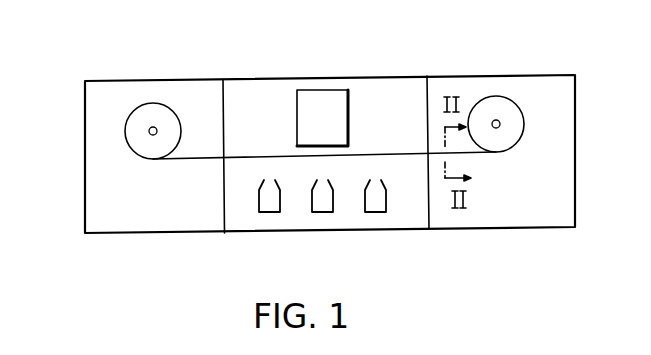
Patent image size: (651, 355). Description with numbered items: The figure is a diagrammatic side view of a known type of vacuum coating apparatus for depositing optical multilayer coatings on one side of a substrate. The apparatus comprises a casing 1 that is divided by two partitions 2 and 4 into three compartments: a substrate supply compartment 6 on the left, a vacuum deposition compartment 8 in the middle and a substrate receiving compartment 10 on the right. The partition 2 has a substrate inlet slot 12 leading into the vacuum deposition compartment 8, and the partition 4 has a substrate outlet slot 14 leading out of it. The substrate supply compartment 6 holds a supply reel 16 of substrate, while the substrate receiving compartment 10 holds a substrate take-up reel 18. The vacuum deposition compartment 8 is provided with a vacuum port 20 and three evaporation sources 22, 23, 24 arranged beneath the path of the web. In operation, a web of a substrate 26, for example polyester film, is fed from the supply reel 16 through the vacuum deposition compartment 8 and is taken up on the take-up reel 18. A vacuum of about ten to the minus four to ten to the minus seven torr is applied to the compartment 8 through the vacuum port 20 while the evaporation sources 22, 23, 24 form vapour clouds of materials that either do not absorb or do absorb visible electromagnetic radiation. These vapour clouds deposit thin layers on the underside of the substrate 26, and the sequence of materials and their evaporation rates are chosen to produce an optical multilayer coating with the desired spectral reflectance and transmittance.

The casing 1 is at (255, 80).
The partition 2 is at (222, 84).
The partition 4 is at (428, 88).
The substrate supply compartment 6 is at (141, 213).
The vacuum deposition compartment 8 is at (267, 145).
The substrate receiving compartment 10 is at (543, 191).
The substrate inlet slot 12 is at (220, 158).
The substrate outlet slot 14 is at (434, 148).
The supply reel 16 is at (137, 128).
The substrate take-up reel 18 is at (524, 125).
The vacuum port 20 is at (313, 113).
The evaporation source 22 is at (273, 205).
The evaporation source 23 is at (325, 205).
The evaporation source 24 is at (376, 205).
The substrate 26 is at (358, 152).